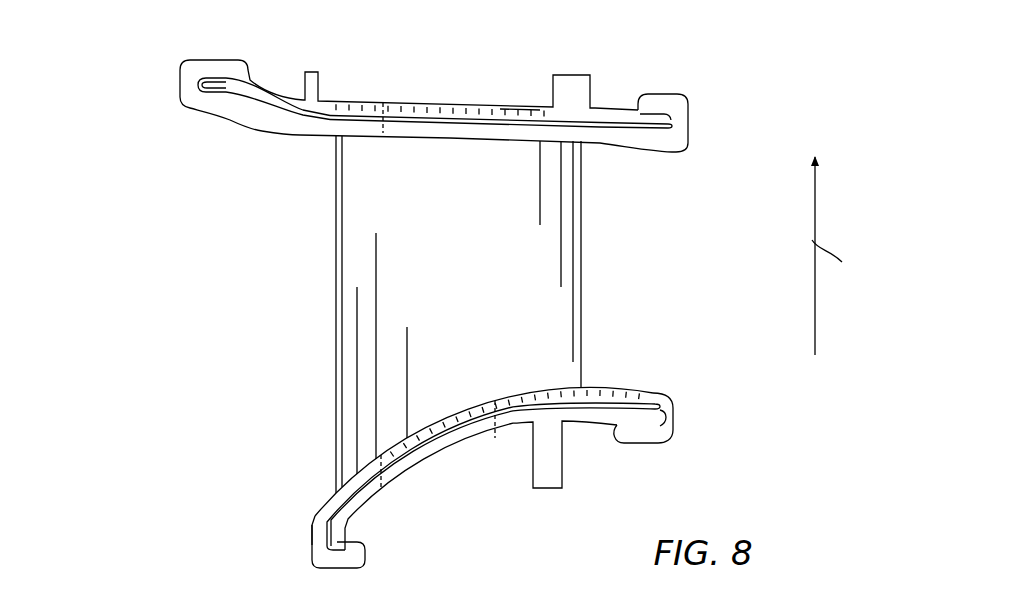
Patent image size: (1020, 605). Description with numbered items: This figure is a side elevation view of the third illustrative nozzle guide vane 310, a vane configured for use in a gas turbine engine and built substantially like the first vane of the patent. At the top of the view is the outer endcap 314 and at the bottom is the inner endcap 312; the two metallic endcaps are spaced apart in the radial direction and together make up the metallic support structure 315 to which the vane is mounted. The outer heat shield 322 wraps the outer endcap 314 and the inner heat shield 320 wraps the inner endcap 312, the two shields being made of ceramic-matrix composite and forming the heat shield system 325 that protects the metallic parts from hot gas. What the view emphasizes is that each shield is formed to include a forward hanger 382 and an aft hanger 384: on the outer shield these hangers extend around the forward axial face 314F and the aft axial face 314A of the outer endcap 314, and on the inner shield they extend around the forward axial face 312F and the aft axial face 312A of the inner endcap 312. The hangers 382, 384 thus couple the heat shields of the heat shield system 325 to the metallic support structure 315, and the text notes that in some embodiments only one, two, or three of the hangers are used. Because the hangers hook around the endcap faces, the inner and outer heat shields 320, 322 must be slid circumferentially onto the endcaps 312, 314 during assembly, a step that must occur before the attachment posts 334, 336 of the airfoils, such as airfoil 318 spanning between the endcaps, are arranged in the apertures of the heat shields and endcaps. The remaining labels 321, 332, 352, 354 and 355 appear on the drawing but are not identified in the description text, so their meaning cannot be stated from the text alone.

The nozzle guide vane 310 is at (749, 99).
The inner endcap 312 is at (548, 495).
The aft axial face of inner endcap 312A is at (668, 421).
The forward axial face of inner endcap 312F is at (268, 566).
The outer endcap 314 is at (566, 73).
The aft axial face of outer endcap 314A is at (672, 128).
The forward axial face of outer endcap 314F is at (197, 83).
The metallic support structure 315 is at (627, 101).
The airfoil 318 is at (316, 356).
The inner heat shield 320 is at (150, 0).
The wall 321 is at (327, 144).
The outer heat shield 322 is at (232, 128).
The heat shield system 325 is at (282, 138).
The inner post 332 is at (356, 296).
The attachment post 334 is at (376, 462).
The attachment post 336 is at (379, 126).
The channel 352 is at (512, 107).
The band lower surface 354 is at (535, 122).
The band bend 355 is at (262, 101).
The forward hanger 382 is at (280, 0).
The aft hanger 384 is at (698, 120).